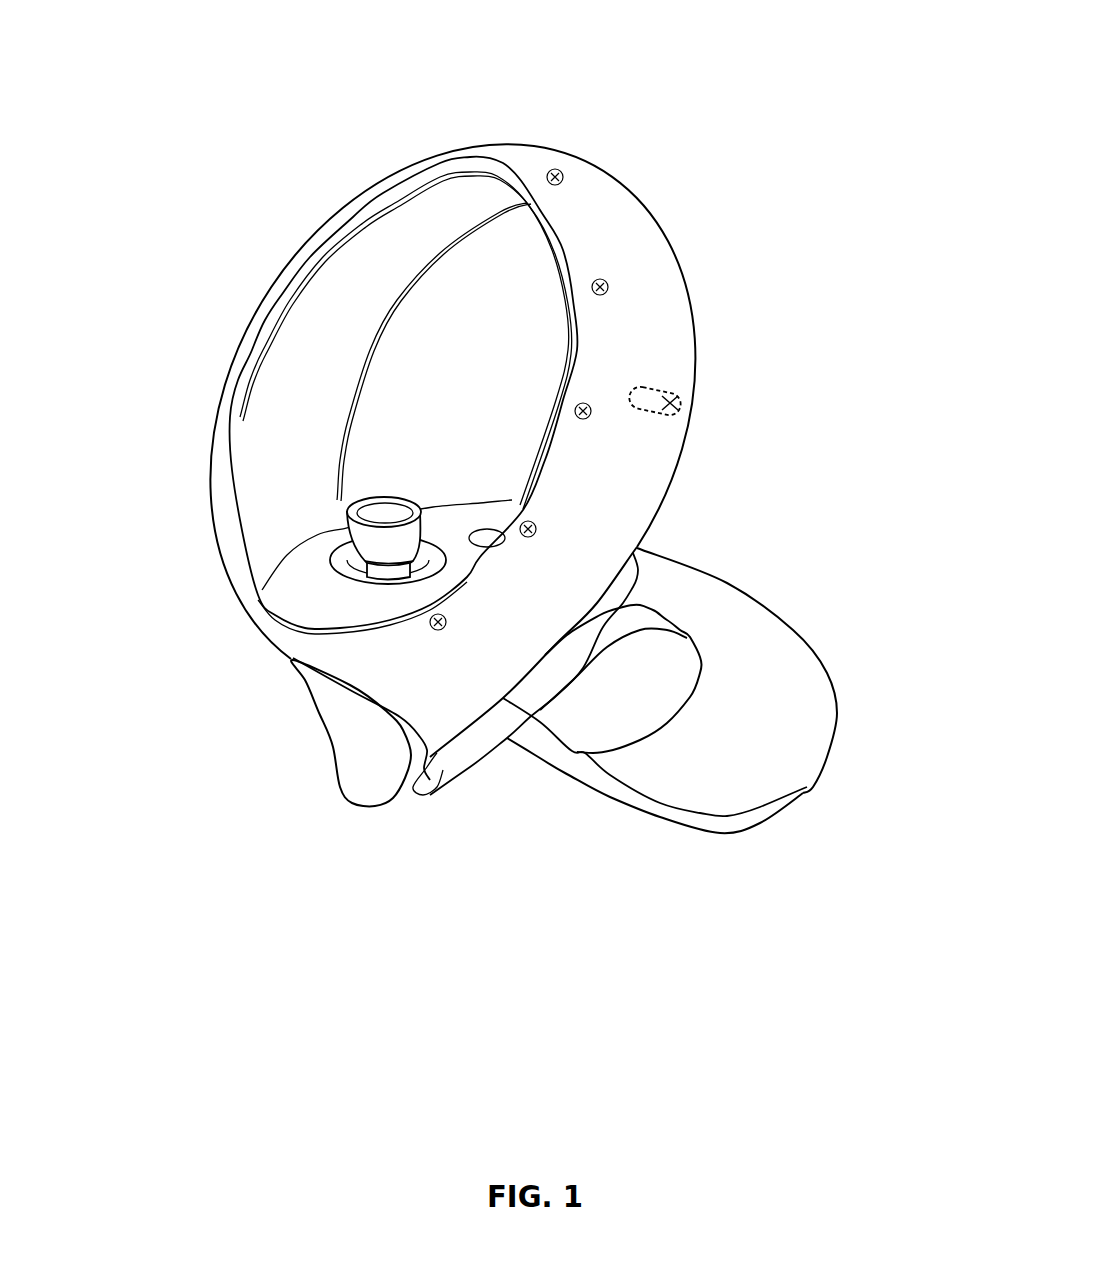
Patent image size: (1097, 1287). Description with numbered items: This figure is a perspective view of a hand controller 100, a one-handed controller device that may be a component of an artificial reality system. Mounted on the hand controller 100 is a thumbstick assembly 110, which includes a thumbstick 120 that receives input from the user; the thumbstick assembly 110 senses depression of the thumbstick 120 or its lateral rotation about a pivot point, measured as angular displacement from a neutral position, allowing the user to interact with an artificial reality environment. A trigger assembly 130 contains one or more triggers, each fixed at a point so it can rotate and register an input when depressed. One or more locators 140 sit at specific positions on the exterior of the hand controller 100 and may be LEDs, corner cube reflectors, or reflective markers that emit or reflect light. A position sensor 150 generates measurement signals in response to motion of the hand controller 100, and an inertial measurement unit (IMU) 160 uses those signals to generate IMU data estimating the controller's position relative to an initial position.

The hand controller 100 is at (344, 80).
The thumbstick assembly 110 is at (366, 490).
The thumbstick 120 is at (370, 538).
The trigger assembly 130 is at (365, 772).
The locators 140 is at (560, 172).
The position sensor 150 is at (668, 402).
The inertial measurement unit (IMU) 160 is at (653, 398).